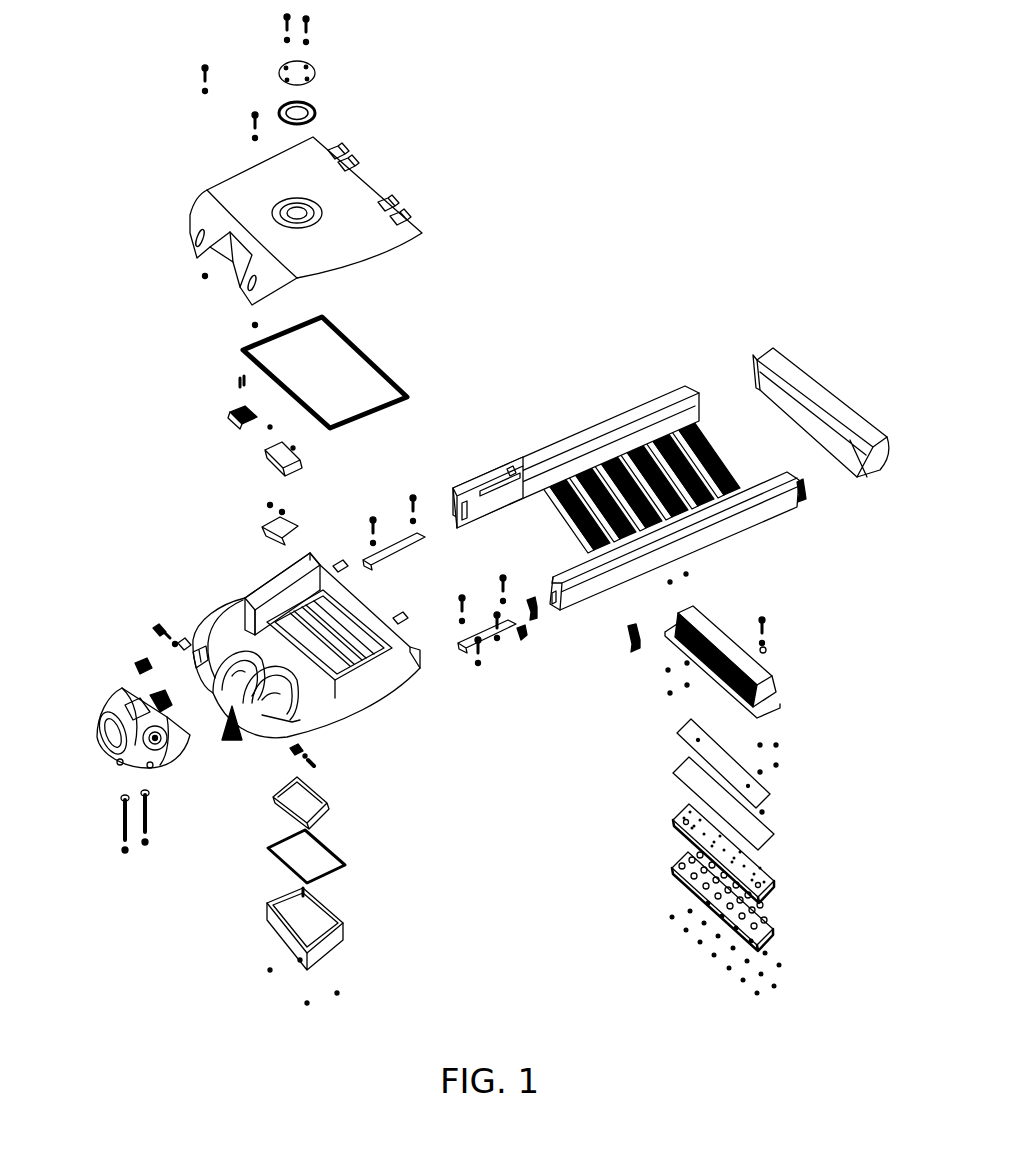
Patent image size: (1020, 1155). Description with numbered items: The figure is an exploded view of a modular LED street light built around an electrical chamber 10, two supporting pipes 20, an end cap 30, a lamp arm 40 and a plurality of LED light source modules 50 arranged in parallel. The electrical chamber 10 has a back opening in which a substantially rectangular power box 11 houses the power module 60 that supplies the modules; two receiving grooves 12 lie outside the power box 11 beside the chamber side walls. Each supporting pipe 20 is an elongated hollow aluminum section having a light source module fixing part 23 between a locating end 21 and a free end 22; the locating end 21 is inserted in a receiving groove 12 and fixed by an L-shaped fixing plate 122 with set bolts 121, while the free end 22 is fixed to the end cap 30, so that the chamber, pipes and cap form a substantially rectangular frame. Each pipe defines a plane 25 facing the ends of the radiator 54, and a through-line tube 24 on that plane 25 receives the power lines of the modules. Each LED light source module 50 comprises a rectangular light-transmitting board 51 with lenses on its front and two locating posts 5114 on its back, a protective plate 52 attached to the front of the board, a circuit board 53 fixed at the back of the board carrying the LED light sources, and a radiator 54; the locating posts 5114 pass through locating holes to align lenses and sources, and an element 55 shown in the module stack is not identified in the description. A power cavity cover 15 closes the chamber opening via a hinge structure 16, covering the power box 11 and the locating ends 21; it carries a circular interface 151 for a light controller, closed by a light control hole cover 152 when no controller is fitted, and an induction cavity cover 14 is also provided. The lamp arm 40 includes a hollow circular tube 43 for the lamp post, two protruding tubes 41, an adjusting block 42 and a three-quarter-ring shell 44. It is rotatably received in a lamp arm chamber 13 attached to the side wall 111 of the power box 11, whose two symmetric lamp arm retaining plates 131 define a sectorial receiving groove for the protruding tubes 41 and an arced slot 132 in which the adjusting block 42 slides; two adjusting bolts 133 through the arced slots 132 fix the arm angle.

The electrical chamber 10 is at (260, 663).
The power box 11 is at (278, 573).
The receiving grooves 12 is at (263, 605).
The lamp arm chamber 13 is at (277, 744).
The induction cavity cover 14 is at (288, 932).
The power cavity cover 15 is at (253, 180).
The hinge structure 16 is at (398, 205).
The supporting pipes 20 is at (623, 457).
The locating end 21 is at (463, 478).
The free end 22 is at (573, 453).
The light source module fixing part 23 is at (583, 438).
The through-line tube 24 is at (674, 471).
The plane 25 is at (488, 503).
The end cap 30 is at (830, 397).
The lamp arm 40 is at (140, 752).
The protruding tubes 41 is at (160, 745).
The adjusting block 42 is at (150, 762).
The circular tube 43 is at (113, 741).
The shell 44 is at (107, 713).
The LED light source modules 50 is at (753, 784).
The light-transmitting board 51 is at (725, 853).
The protective plate 52 is at (754, 901).
The circuit board 53 is at (728, 763).
The radiator 54 is at (703, 632).
The reflector plate 55 is at (762, 835).
The power module 60 is at (323, 572).
The side wall 111 is at (317, 677).
The set bolts 121 is at (462, 601).
The L-shaped fixing plate 122 is at (507, 630).
The lamp arm retaining plates 131 is at (270, 672).
The arced slot 132 is at (220, 692).
The adjusting bolts 133 is at (153, 627).
The interface 151 is at (297, 215).
The light control hole cover 152 is at (297, 71).
The locating posts 5114 is at (688, 830).